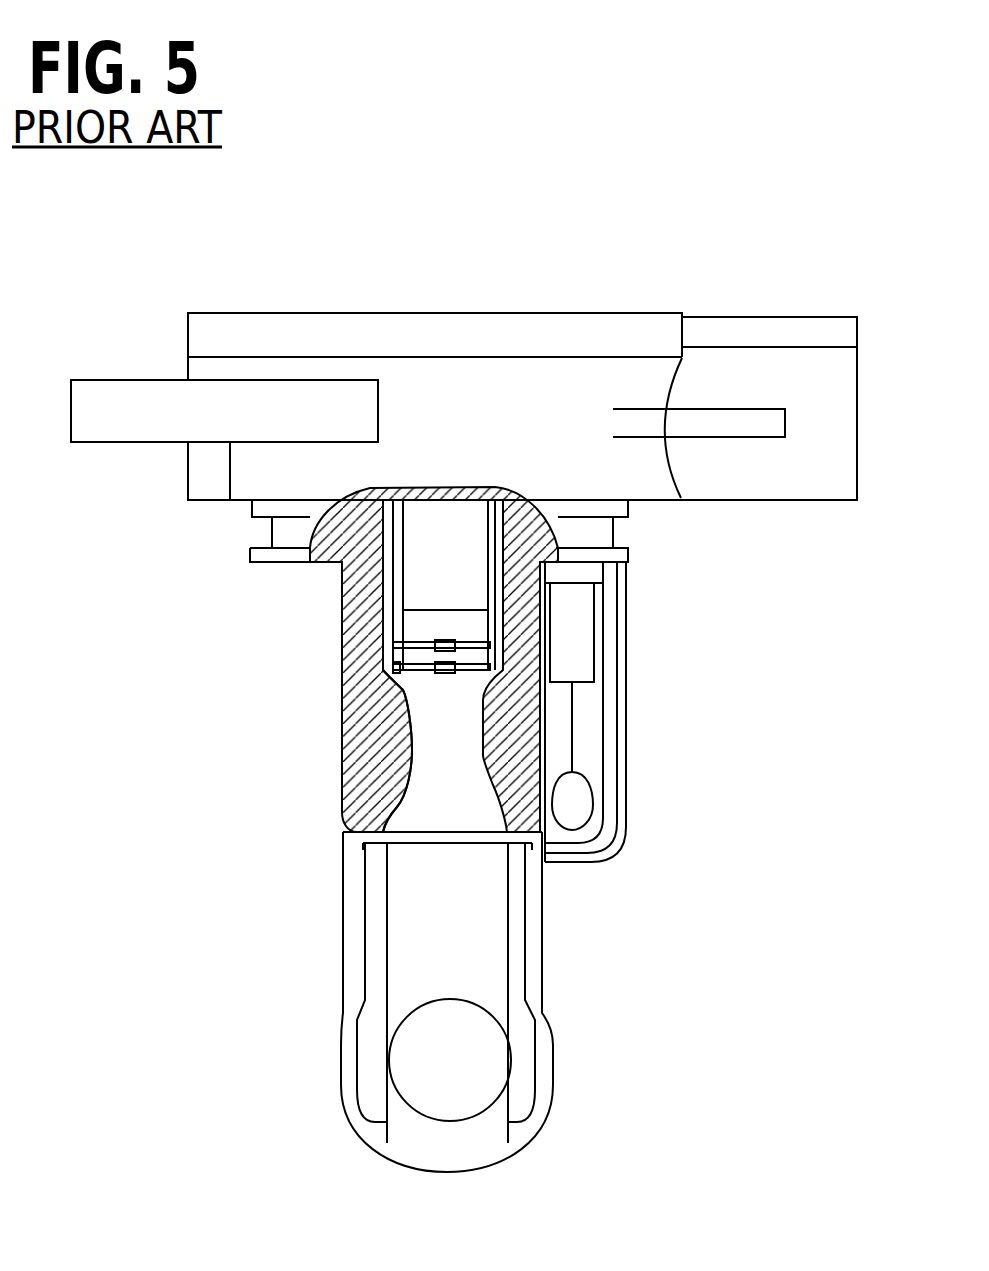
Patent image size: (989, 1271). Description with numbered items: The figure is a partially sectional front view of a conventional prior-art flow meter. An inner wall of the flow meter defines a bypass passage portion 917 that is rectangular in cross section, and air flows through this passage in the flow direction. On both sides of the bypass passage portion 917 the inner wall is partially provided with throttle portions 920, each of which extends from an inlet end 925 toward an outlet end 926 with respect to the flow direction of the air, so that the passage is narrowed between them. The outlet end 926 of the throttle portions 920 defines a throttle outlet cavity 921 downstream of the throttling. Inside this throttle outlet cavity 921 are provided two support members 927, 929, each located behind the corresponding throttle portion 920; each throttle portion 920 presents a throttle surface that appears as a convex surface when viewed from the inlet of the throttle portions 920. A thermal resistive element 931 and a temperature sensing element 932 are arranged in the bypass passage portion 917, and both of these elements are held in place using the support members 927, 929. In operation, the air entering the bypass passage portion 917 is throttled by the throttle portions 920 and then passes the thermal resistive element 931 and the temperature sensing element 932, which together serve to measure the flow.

The bypass passage portion 917 is at (438, 805).
The throttle portion 920 is at (352, 804).
The throttle outlet cavity 921 is at (447, 560).
The inlet end 925 is at (385, 822).
The outlet end 926 is at (395, 645).
The support member 927 is at (393, 623).
The support member 929 is at (375, 690).
The thermal resistive element 931 is at (447, 643).
The temperature sensing element 932 is at (453, 670).